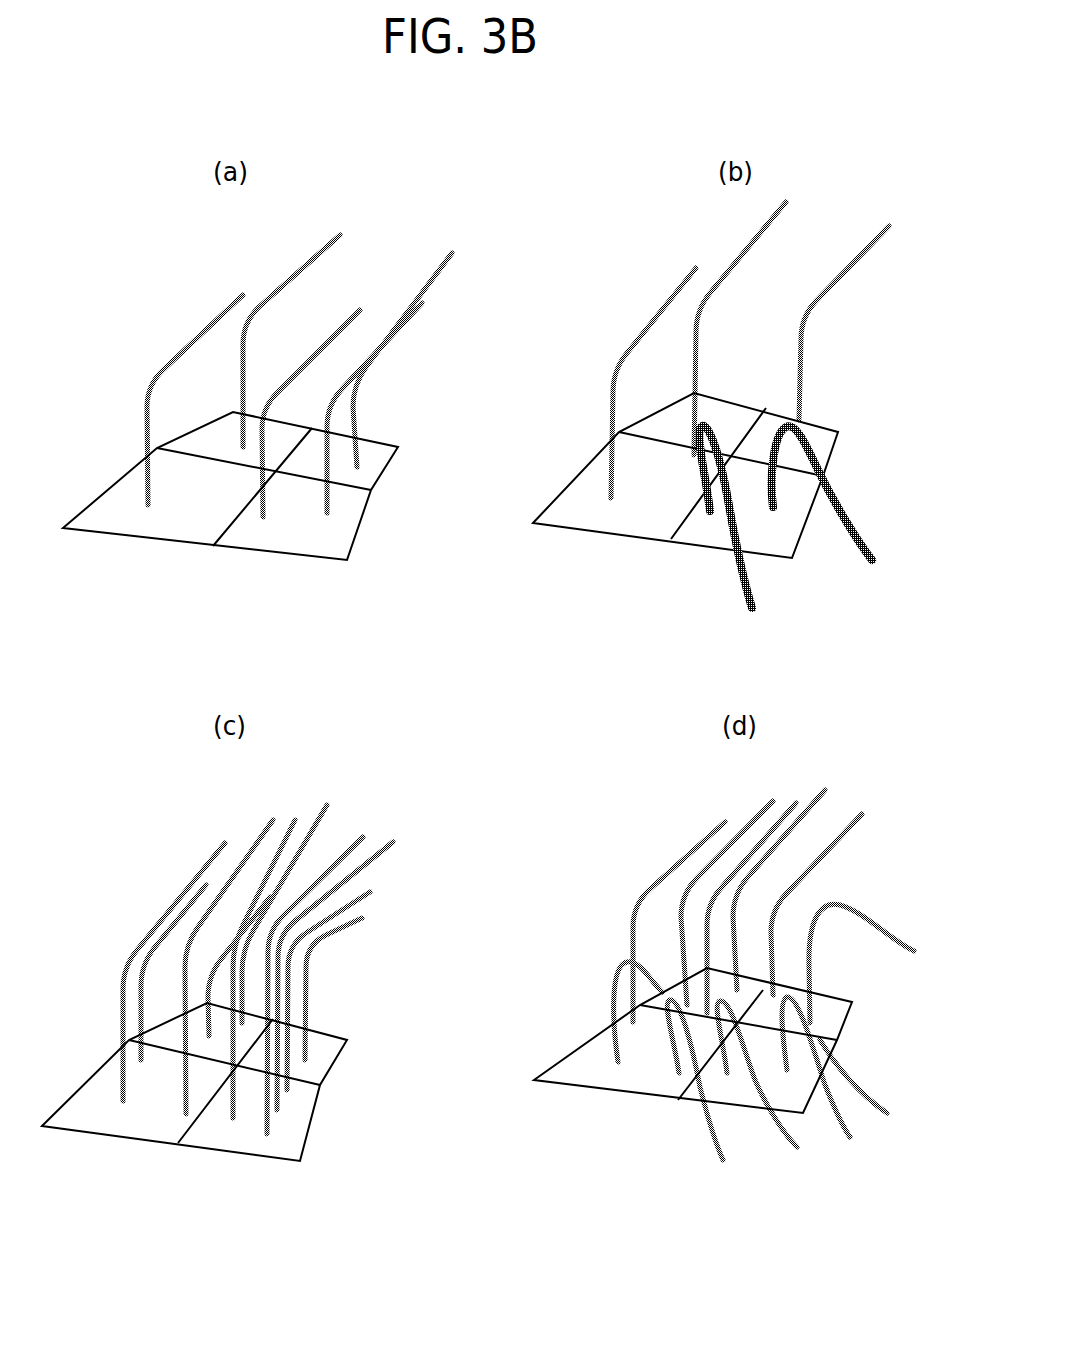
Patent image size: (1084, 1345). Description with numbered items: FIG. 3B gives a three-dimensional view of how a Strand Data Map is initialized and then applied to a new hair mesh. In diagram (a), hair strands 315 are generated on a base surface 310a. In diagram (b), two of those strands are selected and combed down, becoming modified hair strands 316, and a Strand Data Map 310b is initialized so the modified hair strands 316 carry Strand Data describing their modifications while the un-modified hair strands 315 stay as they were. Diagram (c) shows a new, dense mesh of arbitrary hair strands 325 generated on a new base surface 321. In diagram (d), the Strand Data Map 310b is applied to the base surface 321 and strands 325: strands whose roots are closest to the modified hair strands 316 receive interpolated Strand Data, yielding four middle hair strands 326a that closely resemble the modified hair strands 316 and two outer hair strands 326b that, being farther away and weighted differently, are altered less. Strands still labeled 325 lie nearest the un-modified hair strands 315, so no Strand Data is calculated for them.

The base surface 310a is at (178, 525).
The Strand Data Map 310b is at (628, 515).
The hair strands 315 is at (811, 307).
The modified hair strands 316 is at (843, 530).
The base surface 321 is at (141, 1126).
The arbitrary hair strands 325 is at (796, 868).
The middle hair strands 326a is at (789, 1104).
The left-most and right-most hair strands 326b is at (899, 926).